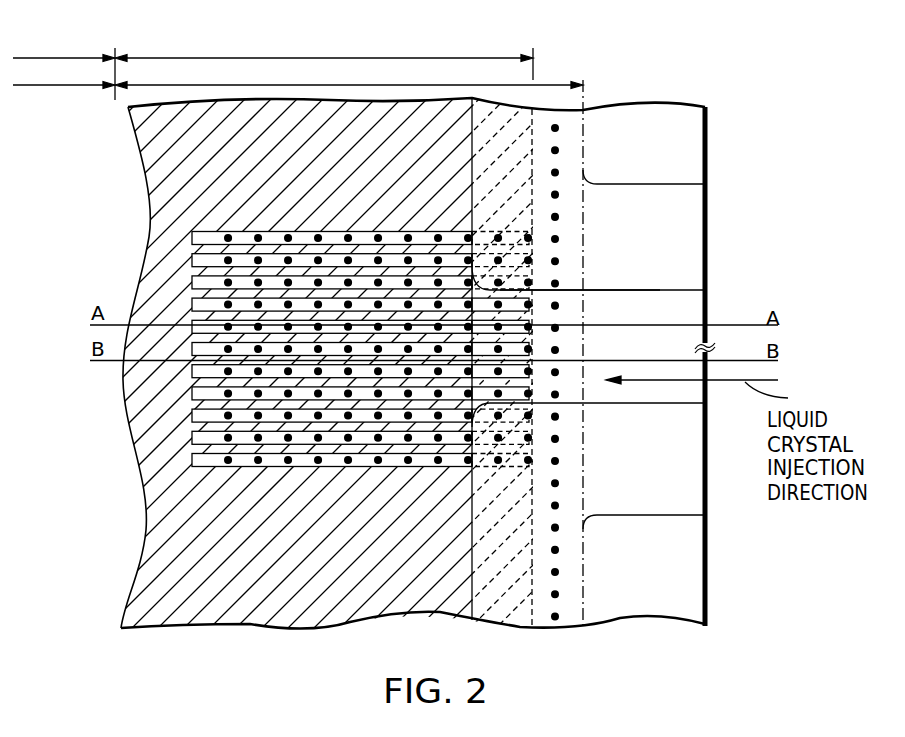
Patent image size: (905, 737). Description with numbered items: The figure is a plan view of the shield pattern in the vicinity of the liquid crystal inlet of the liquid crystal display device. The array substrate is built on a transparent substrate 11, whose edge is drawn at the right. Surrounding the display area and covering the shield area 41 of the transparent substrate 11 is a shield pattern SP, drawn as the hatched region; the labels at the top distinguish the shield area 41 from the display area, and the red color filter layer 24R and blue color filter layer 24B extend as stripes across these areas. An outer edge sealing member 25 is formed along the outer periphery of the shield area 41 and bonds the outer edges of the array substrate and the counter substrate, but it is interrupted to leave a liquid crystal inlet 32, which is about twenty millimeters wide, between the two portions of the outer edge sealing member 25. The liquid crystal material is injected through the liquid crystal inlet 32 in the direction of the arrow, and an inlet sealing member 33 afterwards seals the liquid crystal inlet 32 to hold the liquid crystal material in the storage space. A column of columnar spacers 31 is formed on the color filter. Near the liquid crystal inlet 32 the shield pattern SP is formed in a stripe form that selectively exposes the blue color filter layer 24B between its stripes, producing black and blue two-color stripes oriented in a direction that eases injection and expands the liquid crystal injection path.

The transparent substrate 11 is at (690, 142).
The outer edge sealing member 25 is at (712, 185).
The columnar spacers 31 is at (558, 596).
The liquid crystal inlet 32 is at (662, 290).
The inlet sealing member 33 is at (712, 292).
The shield pattern SP is at (188, 608).
The shield area 41 is at (273, 54).
The red color filter layer 24R is at (64, 75).
The blue color filter layer 24B is at (349, 75).